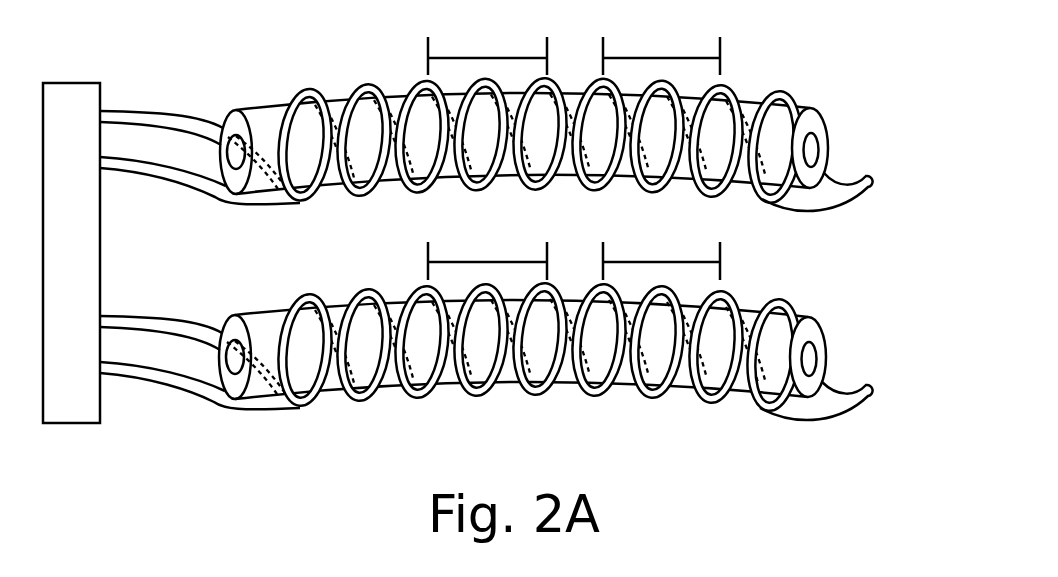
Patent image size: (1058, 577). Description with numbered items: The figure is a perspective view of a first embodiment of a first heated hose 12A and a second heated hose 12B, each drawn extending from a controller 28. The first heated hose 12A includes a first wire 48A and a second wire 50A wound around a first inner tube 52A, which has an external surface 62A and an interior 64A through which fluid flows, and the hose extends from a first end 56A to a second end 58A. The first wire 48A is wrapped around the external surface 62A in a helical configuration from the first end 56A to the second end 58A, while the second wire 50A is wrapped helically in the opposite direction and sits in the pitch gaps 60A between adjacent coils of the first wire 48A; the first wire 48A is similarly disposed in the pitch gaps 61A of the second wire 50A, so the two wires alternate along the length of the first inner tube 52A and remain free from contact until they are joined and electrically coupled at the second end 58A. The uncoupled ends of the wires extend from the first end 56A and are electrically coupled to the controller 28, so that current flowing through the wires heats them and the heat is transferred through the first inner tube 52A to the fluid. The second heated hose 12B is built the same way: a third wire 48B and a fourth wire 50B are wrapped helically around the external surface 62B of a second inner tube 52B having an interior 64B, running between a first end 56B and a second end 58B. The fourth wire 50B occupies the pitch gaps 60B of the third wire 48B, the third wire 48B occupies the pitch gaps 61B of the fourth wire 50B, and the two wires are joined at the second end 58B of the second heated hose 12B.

The controller 28 is at (58, 274).
The first heated hose 12A is at (210, 149).
The second heated hose 12B is at (210, 355).
The first wire 48A is at (186, 178).
The third wire 48B is at (187, 382).
The second wire 50A is at (181, 118).
The fourth wire 50B is at (182, 325).
The first end 56A is at (249, 98).
The first end 56B is at (229, 421).
The pitch gaps 60A is at (484, 56).
The pitch gaps 60B is at (484, 260).
The pitch gaps 61A is at (642, 56).
The pitch gaps 61B is at (642, 260).
The external surface 62A is at (788, 123).
The external surface 62B is at (784, 330).
The first inner tube 52A is at (825, 112).
The second inner tube 52B is at (824, 322).
The second end 58A is at (834, 137).
The second end 58B is at (834, 343).
The interior 64A is at (811, 149).
The interior 64B is at (809, 359).